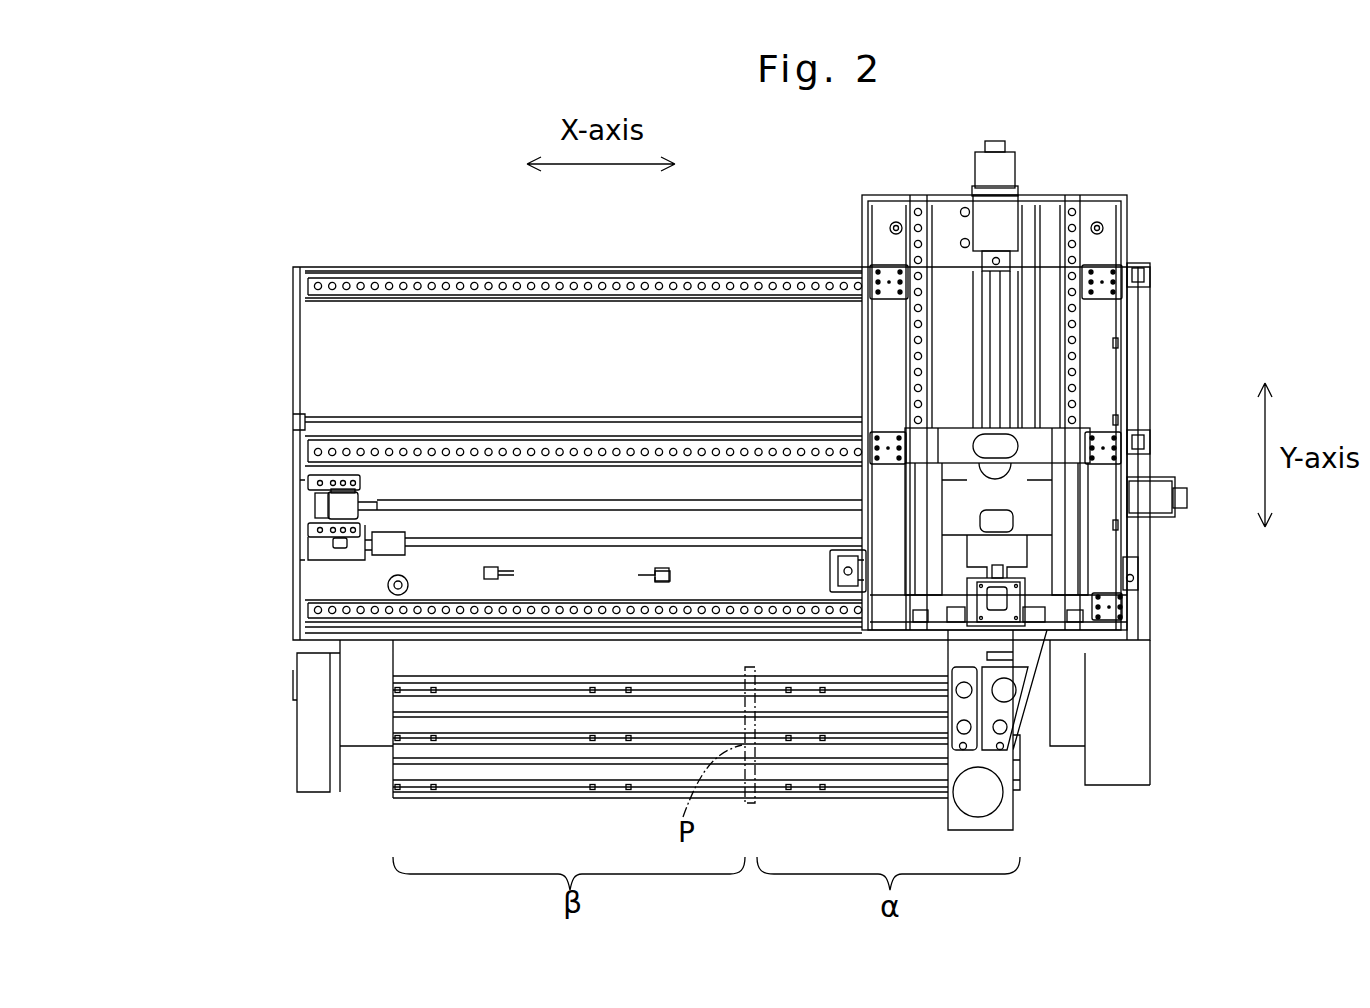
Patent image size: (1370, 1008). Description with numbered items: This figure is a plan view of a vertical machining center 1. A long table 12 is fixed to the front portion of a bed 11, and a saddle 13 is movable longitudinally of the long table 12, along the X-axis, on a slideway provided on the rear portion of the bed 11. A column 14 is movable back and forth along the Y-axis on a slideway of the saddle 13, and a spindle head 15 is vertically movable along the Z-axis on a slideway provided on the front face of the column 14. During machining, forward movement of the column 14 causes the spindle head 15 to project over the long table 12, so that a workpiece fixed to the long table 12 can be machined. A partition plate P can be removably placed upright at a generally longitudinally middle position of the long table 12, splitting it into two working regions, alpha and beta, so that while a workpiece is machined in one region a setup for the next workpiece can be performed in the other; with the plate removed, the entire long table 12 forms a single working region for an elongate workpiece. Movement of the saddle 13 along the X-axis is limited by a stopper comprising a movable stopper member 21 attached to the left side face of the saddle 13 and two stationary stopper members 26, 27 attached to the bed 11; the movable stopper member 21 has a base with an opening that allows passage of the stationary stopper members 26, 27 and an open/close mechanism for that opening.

The vertical machining center 1 is at (1203, 164).
The bed 11 is at (318, 356).
The long table 12 is at (398, 775).
The saddle 13 is at (1097, 332).
The column 14 is at (1080, 545).
The spindle head 15 is at (995, 797).
The movable stopper member 21 is at (830, 569).
The stationary stopper member 26 is at (638, 575).
The stationary stopper member 27 is at (482, 570).